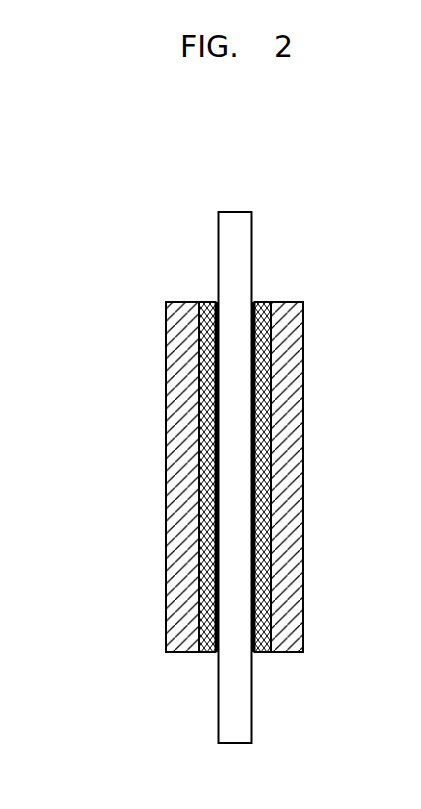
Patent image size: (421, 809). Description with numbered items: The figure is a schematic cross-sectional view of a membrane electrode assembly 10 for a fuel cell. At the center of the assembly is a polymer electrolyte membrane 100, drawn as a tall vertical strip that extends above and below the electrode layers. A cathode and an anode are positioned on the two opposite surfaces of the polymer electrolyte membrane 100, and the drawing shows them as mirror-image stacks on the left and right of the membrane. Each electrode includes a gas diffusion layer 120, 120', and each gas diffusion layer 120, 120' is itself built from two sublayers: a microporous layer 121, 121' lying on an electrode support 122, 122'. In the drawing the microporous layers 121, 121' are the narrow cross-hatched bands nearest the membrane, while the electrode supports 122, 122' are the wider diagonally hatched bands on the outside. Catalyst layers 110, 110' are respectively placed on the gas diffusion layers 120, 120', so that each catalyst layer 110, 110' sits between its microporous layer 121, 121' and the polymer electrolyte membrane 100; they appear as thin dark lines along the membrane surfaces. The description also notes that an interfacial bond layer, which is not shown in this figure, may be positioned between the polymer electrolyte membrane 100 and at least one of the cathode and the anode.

The membrane electrode assembly 10 is at (99, 195).
The polymer electrolyte membrane 100 is at (232, 214).
The catalyst layer 110 is at (197, 506).
The catalyst layer 110' is at (274, 506).
The gas diffusion layer 120 is at (174, 427).
The microporous layer 121 is at (197, 446).
The electrode support 122 is at (164, 446).
The gas diffusion layer 120' is at (299, 427).
The microporous layer 121' is at (278, 446).
The electrode support 122' is at (311, 446).